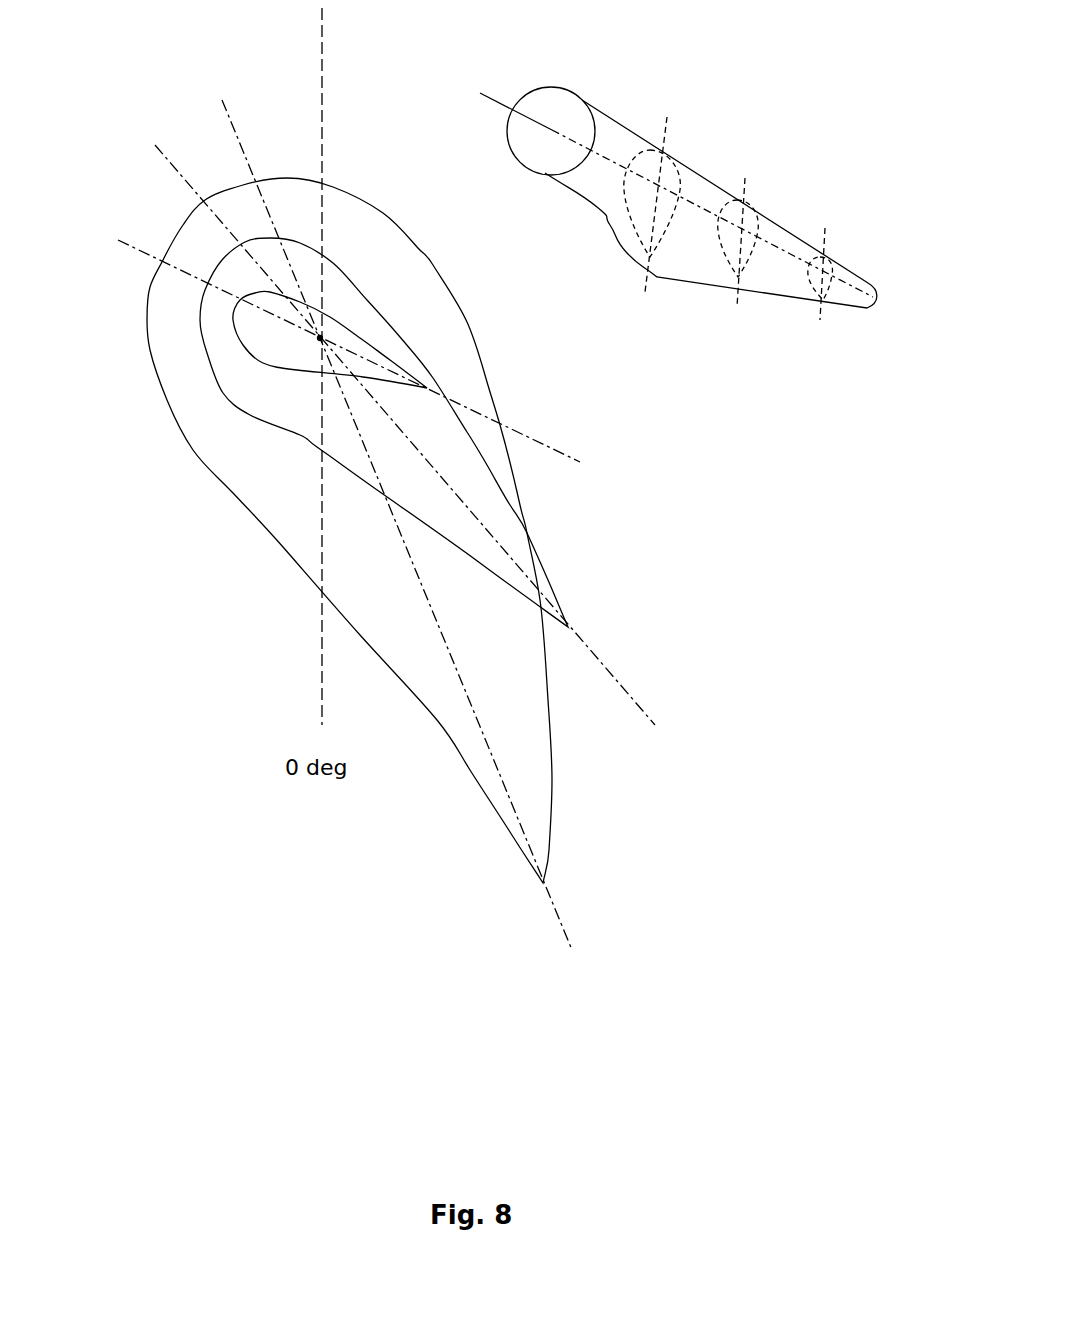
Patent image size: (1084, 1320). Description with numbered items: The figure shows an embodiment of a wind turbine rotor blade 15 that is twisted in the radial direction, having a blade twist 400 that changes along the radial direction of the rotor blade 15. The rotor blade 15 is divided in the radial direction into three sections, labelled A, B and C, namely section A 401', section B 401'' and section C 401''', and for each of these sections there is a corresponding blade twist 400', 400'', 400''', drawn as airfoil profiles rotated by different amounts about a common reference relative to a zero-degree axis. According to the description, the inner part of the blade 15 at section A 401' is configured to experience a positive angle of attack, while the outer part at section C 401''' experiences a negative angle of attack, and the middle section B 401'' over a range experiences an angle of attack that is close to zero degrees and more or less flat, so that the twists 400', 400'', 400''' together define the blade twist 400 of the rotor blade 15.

The blade twist 400 is at (377, 479).
The blade twist of section A 400' is at (422, 620).
The blade twist of section B 400'' is at (494, 537).
The blade twist of section C 400''' is at (485, 429).
The rotor blade 15 is at (613, 142).
The section A 401' is at (677, 254).
The section B 401'' is at (774, 290).
The section C 401''' is at (869, 320).